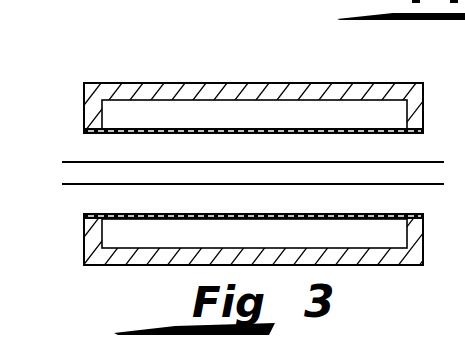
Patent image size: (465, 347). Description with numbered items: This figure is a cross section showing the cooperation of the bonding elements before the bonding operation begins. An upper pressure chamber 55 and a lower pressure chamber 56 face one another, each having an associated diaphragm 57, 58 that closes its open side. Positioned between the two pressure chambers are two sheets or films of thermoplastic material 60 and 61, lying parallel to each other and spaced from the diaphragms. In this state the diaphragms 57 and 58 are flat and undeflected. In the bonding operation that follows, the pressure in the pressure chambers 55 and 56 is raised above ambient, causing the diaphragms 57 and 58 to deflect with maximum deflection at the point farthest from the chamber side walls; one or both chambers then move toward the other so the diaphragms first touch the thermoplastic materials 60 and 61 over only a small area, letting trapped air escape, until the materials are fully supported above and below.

The upper pressure chamber 55 is at (104, 72).
The lower pressure chamber 56 is at (148, 272).
The diaphragm 57 is at (167, 135).
The diaphragm 58 is at (228, 194).
The sheet of thermoplastic material 60 is at (75, 162).
The sheet of thermoplastic material 61 is at (73, 186).